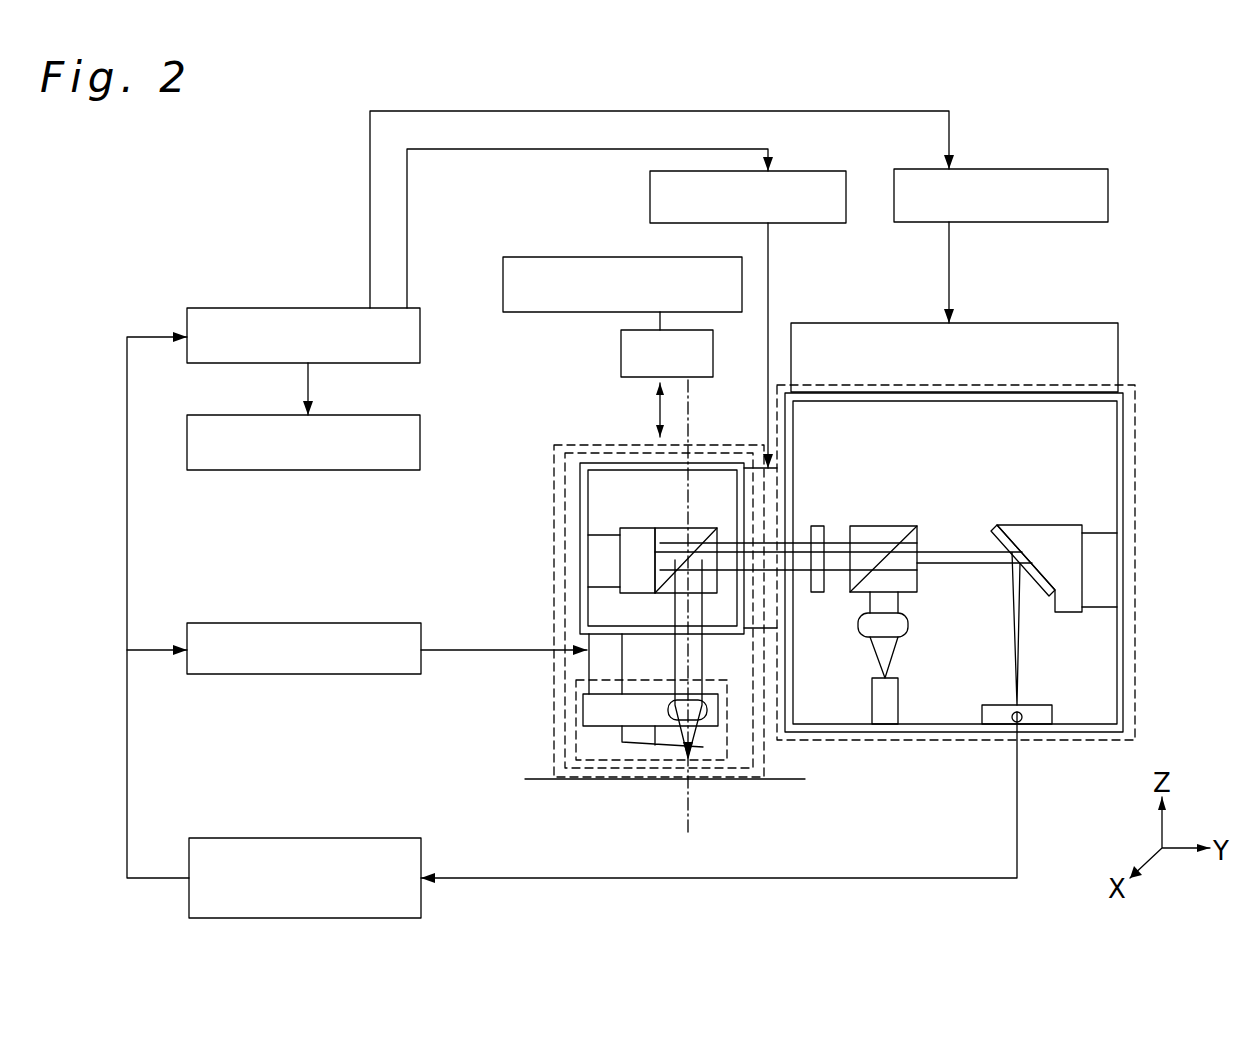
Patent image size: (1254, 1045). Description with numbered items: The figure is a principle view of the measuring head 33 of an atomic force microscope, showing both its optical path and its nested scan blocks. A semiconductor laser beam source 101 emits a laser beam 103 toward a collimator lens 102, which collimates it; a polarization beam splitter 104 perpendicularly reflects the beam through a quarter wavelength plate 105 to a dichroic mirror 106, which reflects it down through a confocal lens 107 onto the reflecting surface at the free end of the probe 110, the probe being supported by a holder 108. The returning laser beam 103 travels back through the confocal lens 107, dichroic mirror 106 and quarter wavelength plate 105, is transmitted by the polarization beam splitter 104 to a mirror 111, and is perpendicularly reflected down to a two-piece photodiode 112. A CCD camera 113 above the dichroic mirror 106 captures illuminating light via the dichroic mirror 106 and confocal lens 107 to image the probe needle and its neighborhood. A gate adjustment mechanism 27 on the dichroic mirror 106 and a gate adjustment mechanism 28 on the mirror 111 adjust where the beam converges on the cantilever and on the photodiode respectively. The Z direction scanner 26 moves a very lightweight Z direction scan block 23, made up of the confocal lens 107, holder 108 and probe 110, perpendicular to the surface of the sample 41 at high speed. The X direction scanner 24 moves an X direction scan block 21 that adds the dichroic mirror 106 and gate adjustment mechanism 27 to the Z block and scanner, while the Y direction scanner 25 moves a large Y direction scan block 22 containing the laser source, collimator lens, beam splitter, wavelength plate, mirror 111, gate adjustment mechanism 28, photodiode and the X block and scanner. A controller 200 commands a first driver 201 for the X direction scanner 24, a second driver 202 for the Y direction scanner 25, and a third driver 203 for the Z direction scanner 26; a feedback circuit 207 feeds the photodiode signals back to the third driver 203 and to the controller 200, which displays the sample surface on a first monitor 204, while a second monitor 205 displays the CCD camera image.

The controller 200 is at (237, 308).
The first driver 201 is at (803, 223).
The second driver 202 is at (1108, 222).
The third driver 203 is at (342, 623).
The first monitor 204 is at (187, 450).
The second monitor 205 is at (503, 283).
The feedback circuit 207 is at (325, 838).
The CCD camera 113 is at (621, 340).
The Y direction scanner 25 is at (968, 323).
The measuring head 33 is at (1122, 348).
The Y direction scan block 22 is at (1137, 428).
The X direction scan block 21 is at (565, 493).
The X direction scanner 24 is at (760, 463).
The gate adjustment mechanism 27 is at (620, 565).
The dichroic mirror 106 is at (663, 527).
The Z direction scanner 26 is at (587, 662).
The Z direction scan block 23 is at (583, 707).
The sample 41 is at (547, 779).
The holder 108 is at (622, 737).
The probe 110 is at (670, 747).
The confocal lens 107 is at (707, 712).
The laser beam 103 is at (898, 600).
The quarter wavelength plate 105 is at (817, 526).
The polarization beam splitter 104 is at (898, 526).
The collimator lens 102 is at (908, 625).
The semiconductor laser beam source 101 is at (898, 705).
The gate adjustment mechanism 28 is at (1083, 552).
The mirror 111 is at (990, 538).
The two-piece photodiode 112 is at (1047, 663).